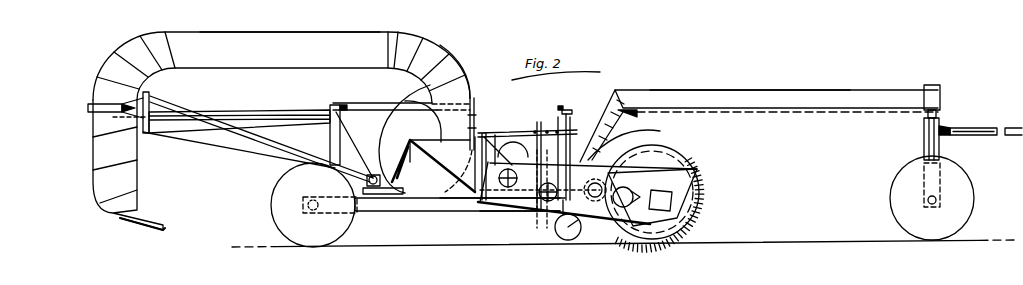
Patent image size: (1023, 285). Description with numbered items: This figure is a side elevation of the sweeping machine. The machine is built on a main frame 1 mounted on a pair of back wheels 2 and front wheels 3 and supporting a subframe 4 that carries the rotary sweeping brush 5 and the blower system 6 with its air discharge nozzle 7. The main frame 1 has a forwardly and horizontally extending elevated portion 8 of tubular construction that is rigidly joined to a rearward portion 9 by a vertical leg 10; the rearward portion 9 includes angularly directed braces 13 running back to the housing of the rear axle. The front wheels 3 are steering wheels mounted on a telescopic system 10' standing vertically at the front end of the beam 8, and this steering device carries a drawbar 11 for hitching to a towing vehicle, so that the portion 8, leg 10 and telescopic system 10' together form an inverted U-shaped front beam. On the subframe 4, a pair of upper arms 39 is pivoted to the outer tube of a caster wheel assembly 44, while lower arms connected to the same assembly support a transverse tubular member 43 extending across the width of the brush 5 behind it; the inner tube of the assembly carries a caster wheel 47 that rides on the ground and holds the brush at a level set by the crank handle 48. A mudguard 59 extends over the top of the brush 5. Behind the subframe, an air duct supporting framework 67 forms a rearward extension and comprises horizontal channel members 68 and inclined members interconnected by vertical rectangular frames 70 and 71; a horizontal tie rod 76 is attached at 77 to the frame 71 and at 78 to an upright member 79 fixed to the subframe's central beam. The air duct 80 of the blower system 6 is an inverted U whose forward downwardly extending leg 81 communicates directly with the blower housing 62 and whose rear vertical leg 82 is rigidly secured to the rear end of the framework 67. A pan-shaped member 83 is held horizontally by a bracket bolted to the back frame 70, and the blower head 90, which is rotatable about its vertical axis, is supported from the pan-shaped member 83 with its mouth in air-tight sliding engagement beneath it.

The main frame 1 is at (788, 119).
The back wheels 2 is at (300, 186).
The front wheels 3 is at (965, 193).
The subframe 4 is at (462, 208).
The rotary sweeping brush 5 is at (618, 237).
The blower system 6 is at (257, 76).
The air discharge nozzle 7 is at (165, 224).
The elevated portion 8 is at (748, 108).
The rearward portion 9 is at (508, 212).
The vertical leg 10 is at (634, 142).
The telescopic system 10' is at (902, 135).
The drawbar 11 is at (990, 132).
The braces 13 is at (410, 208).
The upper arms 39 is at (520, 132).
The transverse tubular member 43 is at (598, 204).
The caster wheel assemblies 44 is at (580, 132).
The caster wheel 47 is at (565, 239).
The crank handle 48 is at (558, 108).
The mudguard 59 is at (688, 164).
The blower housing 62 is at (402, 128).
The air duct supporting framework 67 is at (220, 148).
The channel members 68 is at (262, 110).
The vertical rectangular frame 70 is at (160, 103).
The vertical rectangular frame 71 is at (290, 148).
The tie rod 76 is at (370, 107).
The attachment point 77 is at (332, 105).
The attachment point 78 is at (471, 100).
The upright member 79 is at (474, 119).
The air duct 80 is at (343, 62).
The forward downwardly extending leg 81 is at (458, 87).
The rear vertical leg 82 is at (100, 91).
The pan-shaped member 83 is at (93, 107).
The blower head 90 is at (85, 146).